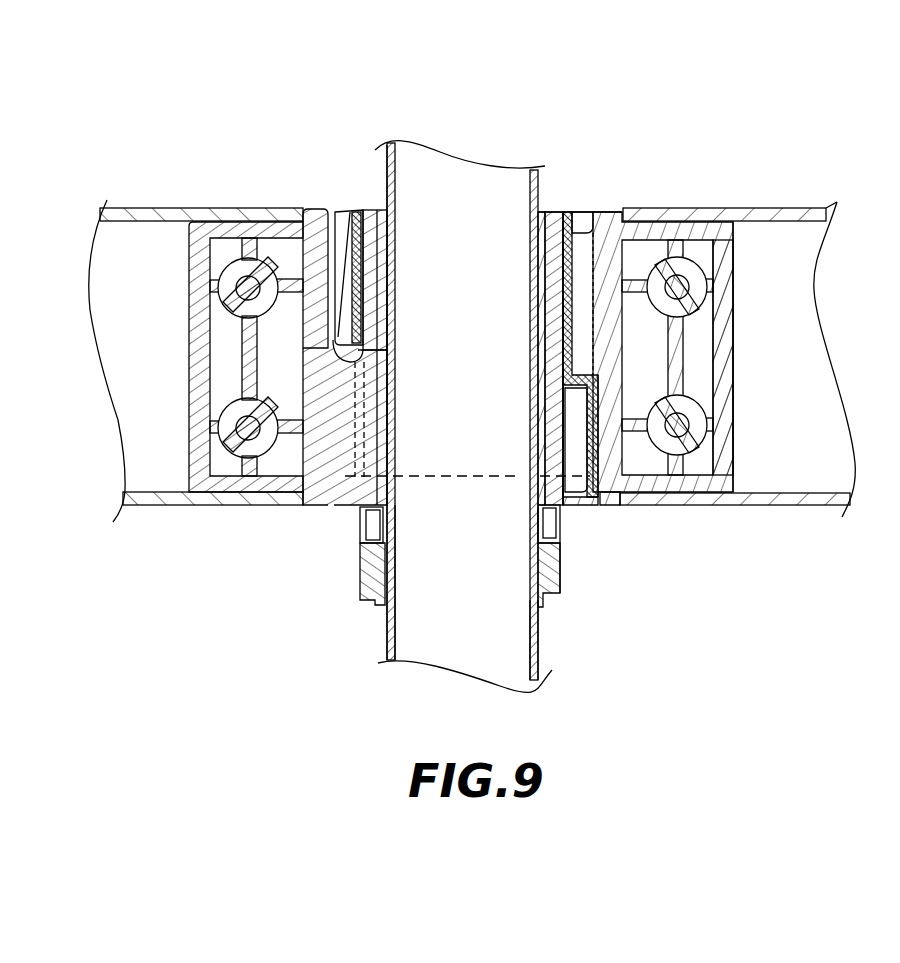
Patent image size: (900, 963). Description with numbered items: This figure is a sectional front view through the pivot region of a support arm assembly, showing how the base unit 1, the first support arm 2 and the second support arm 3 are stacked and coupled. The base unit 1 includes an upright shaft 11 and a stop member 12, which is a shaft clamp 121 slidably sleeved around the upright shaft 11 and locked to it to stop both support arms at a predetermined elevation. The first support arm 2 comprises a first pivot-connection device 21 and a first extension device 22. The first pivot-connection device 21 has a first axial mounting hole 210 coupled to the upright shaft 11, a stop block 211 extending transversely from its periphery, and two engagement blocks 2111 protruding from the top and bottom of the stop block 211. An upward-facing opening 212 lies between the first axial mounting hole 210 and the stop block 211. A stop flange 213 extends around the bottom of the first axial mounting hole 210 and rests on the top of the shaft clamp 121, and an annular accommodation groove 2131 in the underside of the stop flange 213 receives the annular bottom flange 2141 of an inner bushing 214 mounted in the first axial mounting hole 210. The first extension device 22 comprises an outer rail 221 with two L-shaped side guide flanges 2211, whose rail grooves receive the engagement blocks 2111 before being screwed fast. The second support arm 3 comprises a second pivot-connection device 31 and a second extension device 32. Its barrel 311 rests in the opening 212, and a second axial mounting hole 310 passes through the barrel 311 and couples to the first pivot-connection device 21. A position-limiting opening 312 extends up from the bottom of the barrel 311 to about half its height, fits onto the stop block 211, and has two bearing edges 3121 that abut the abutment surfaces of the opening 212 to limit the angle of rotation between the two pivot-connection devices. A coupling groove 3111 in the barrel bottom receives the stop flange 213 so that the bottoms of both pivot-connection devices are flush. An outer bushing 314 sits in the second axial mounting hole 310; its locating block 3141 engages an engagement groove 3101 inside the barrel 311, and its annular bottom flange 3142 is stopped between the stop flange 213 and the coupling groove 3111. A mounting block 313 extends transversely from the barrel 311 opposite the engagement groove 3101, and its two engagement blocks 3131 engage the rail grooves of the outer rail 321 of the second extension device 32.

The base unit 1 is at (570, 700).
The upright shaft 11 is at (538, 625).
The stop member 12 is at (600, 650).
The shaft clamp 121 is at (557, 598).
The first support arm 2 is at (428, 90).
The first pivot-connection device 21 is at (393, 210).
The first axial mounting hole 210 is at (390, 307).
The stop block 211 is at (287, 260).
The engagement block 2111 is at (233, 235).
The opening 212 is at (327, 235).
The stop flange 213 is at (563, 507).
The annular accommodation groove 2131 is at (568, 578).
The inner bushing 214 is at (530, 473).
The annular bottom flange 2141 is at (530, 543).
The first extension device 22 is at (118, 150).
The outer rail 221 is at (142, 250).
The side guide flange 2211 is at (180, 215).
The second support arm 3 is at (613, 125).
The second pivot-connection device 31 is at (581, 257).
The second axial mounting hole 310 is at (578, 235).
The engagement groove 3101 is at (603, 277).
The barrel 311 is at (347, 212).
The coupling groove 3111 is at (615, 507).
The position-limiting opening 312 is at (345, 348).
The bearing edge 3121 is at (320, 507).
The mounting block 313 is at (752, 330).
The engagement block 3131 is at (707, 330).
The outer bushing 314 is at (748, 505).
The locating block 3141 is at (692, 500).
The annular bottom flange 3142 is at (378, 375).
The second extension device 32 is at (805, 150).
The outer rail 321 is at (780, 300).